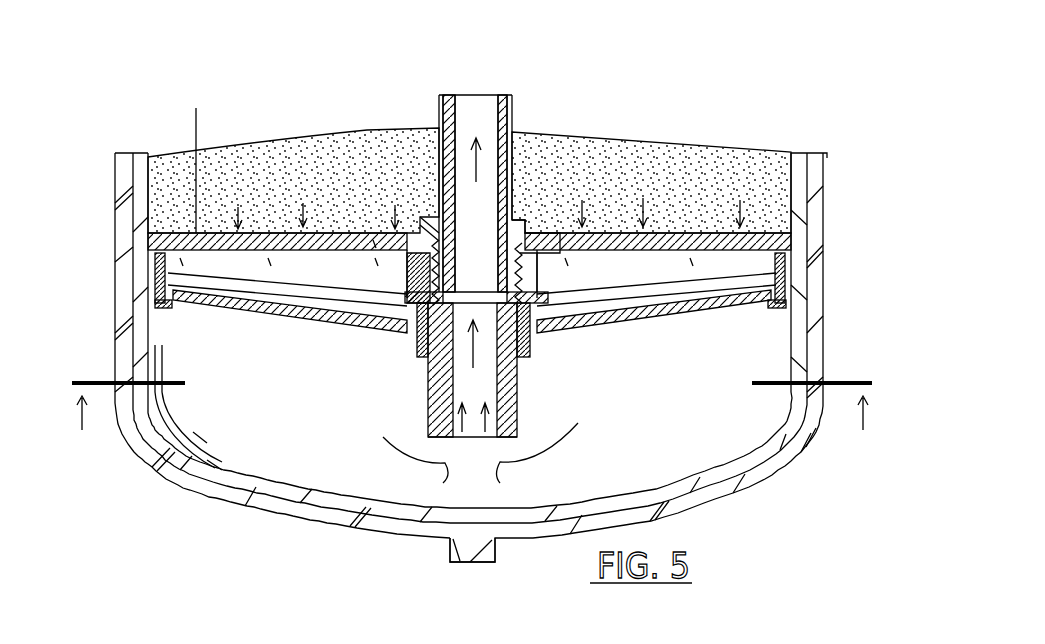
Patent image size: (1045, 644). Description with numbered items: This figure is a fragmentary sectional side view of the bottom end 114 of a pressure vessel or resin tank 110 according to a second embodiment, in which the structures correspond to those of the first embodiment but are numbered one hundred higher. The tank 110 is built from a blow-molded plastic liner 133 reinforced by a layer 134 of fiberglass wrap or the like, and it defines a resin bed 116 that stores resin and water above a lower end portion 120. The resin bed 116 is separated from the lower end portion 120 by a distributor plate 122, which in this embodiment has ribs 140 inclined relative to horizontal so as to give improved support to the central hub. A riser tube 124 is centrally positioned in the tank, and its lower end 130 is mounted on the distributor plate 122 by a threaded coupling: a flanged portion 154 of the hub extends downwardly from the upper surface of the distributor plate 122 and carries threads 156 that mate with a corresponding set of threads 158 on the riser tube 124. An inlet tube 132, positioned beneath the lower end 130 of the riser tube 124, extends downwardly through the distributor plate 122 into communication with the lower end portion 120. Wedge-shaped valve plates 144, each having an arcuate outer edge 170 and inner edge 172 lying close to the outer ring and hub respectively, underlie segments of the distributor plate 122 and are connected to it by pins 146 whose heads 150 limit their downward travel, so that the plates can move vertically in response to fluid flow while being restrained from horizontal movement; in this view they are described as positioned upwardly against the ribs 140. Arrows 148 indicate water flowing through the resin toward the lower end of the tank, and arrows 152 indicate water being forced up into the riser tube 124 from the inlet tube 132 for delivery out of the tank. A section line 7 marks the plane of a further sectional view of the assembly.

The resin tank 110 is at (804, 497).
The bottom end 114 is at (327, 506).
The resin bed 116 is at (710, 180).
The lower end portion 120 is at (807, 445).
The distributor plate 122 is at (192, 156).
The riser tube 124 is at (510, 112).
The lower end 130 is at (507, 183).
The inlet tube 132 is at (428, 400).
The liner 133 is at (690, 488).
The layer of fiberglass wrap 134 is at (230, 505).
The ribs 140 is at (700, 282).
The valve plates 144 is at (673, 317).
The pins 146 is at (785, 258).
The arrows 148 is at (643, 198).
The heads 150 is at (786, 300).
The arrows 152 is at (480, 460).
The flanged portion 154 is at (437, 240).
The threads 156 is at (373, 240).
The threads 158 is at (432, 250).
The outer edge 170 is at (800, 280).
The inner edge 172 is at (536, 335).
The section line 7 is at (477, 406).